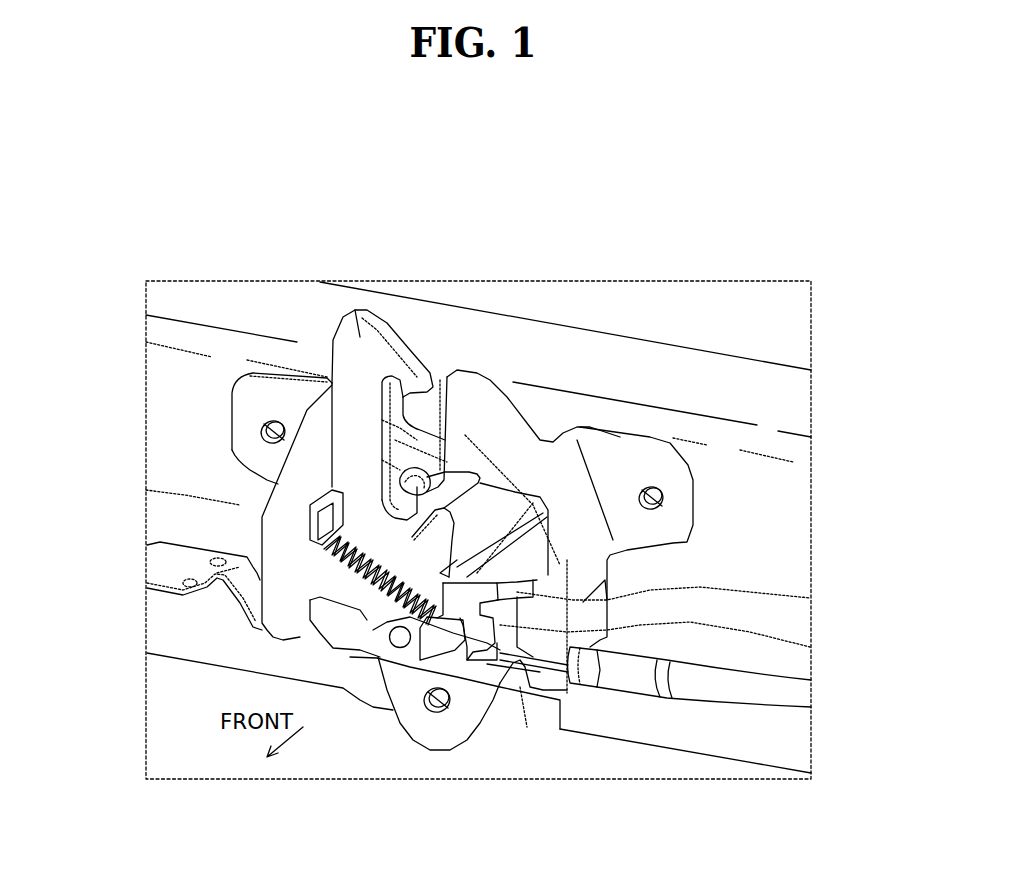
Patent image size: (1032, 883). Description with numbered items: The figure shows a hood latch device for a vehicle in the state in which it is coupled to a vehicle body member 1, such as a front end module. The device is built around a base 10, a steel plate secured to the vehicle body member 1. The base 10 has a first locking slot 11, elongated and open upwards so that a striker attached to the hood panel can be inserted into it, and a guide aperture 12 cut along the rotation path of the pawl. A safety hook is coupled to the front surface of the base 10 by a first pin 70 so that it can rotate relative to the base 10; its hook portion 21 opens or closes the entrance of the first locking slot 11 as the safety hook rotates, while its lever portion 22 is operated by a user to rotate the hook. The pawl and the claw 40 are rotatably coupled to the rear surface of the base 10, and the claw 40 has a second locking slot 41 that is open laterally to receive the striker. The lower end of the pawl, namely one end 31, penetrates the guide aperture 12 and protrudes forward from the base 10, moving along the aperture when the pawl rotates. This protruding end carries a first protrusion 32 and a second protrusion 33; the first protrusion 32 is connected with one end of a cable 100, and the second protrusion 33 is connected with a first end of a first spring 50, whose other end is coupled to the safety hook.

The vehicle body member 1 is at (795, 404).
The base 10 is at (287, 522).
The first locking slot 11 is at (410, 350).
The guide aperture 12 is at (810, 598).
The hook portion 21 is at (357, 313).
The lever portion 22 is at (378, 660).
The one end of the pawl 31 is at (810, 647).
The first protrusion 32 is at (473, 672).
The second protrusion 33 is at (438, 657).
The claw 40 is at (393, 455).
The second locking slot 41 is at (444, 460).
The first spring 50 is at (320, 580).
The first pin 70 is at (400, 650).
The cable 100 is at (540, 667).